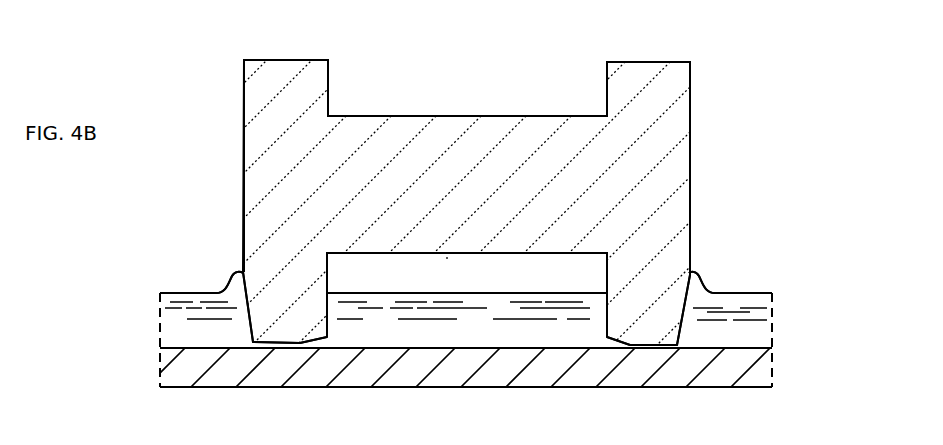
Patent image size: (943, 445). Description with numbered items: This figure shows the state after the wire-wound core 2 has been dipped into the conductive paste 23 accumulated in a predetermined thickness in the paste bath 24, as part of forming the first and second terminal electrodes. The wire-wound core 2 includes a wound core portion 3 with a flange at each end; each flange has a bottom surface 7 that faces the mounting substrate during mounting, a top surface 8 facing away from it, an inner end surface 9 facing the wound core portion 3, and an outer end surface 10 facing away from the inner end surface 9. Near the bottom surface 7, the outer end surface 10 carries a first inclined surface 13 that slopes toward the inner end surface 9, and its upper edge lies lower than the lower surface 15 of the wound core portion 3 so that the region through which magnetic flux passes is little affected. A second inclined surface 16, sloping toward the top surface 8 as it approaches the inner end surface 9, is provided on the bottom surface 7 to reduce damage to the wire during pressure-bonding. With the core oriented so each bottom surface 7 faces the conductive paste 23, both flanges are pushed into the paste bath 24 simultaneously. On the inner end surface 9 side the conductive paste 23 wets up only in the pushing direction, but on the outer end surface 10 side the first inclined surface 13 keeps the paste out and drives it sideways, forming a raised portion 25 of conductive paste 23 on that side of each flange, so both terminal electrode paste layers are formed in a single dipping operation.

The wire-wound core 2 is at (433, 80).
The wound core portion 3 is at (490, 108).
The bottom surface 7 is at (279, 356).
The top surface 8 is at (288, 60).
The inner end surface 9 is at (327, 282).
The outer end surface 10 is at (237, 182).
The first inclined surface 13 is at (248, 315).
The lower surface 15 is at (447, 257).
The second inclined surface 16 is at (315, 343).
The conductive paste 23 is at (768, 323).
The paste bath 24 is at (768, 370).
The raised portion 25 is at (235, 276).